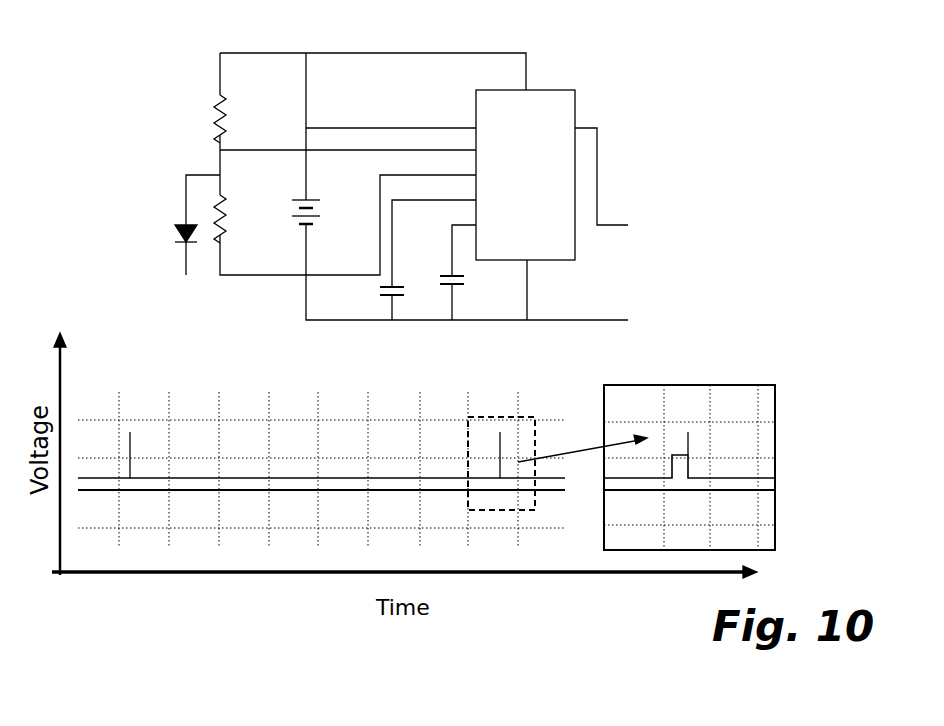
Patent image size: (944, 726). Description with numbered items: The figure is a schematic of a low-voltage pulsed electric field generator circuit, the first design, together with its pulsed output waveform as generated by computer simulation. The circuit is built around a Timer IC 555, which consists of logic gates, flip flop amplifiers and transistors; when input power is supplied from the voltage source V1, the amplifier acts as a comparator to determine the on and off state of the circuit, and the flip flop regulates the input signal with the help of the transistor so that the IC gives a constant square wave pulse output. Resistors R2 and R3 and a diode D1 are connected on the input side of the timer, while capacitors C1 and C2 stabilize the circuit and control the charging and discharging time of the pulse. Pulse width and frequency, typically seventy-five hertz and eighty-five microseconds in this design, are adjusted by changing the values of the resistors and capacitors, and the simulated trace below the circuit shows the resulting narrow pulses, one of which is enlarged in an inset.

The resistor R2 (3.6 kΩ) R2 is at (238, 106).
The resistor R3 (390 kΩ) R3 is at (240, 205).
The diode D1 is at (195, 226).
The voltage source V1 (12 V) V1 is at (325, 204).
The capacitor C1 (0.027 uF) C1 is at (363, 296).
The capacitor C2 (0.01 uF) C2 is at (475, 268).
The Timer IC 555 is at (527, 159).